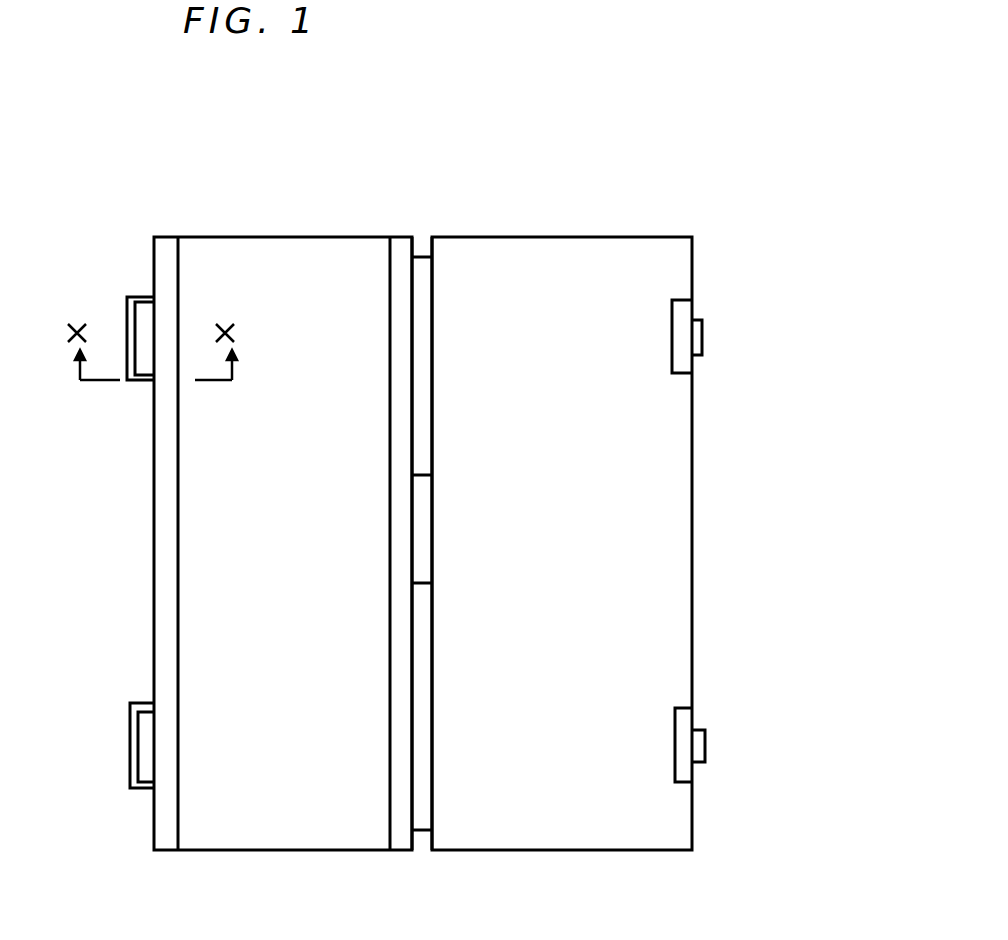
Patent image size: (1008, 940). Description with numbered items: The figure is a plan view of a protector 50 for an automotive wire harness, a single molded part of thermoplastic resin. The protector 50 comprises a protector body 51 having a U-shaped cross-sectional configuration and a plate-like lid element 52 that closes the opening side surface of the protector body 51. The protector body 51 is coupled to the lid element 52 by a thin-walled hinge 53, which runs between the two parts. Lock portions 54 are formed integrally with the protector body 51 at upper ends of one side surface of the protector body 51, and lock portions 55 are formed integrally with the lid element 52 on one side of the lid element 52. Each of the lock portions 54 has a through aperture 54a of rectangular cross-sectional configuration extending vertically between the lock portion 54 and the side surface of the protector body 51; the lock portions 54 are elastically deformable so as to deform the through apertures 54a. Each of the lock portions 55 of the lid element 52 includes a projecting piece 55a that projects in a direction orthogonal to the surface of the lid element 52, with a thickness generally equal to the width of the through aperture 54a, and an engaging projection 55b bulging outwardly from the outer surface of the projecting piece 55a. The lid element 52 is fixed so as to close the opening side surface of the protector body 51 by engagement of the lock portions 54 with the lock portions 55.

The protector 50 is at (718, 286).
The protector body 51 is at (153, 577).
The lid element 52 is at (696, 623).
The thin-walled hinge 53 is at (421, 256).
The lock portion 54 is at (130, 296).
The through aperture 54a is at (142, 379).
The lock portion 55 is at (787, 547).
The projecting piece 55a is at (684, 373).
The engaging projection 55b is at (702, 338).